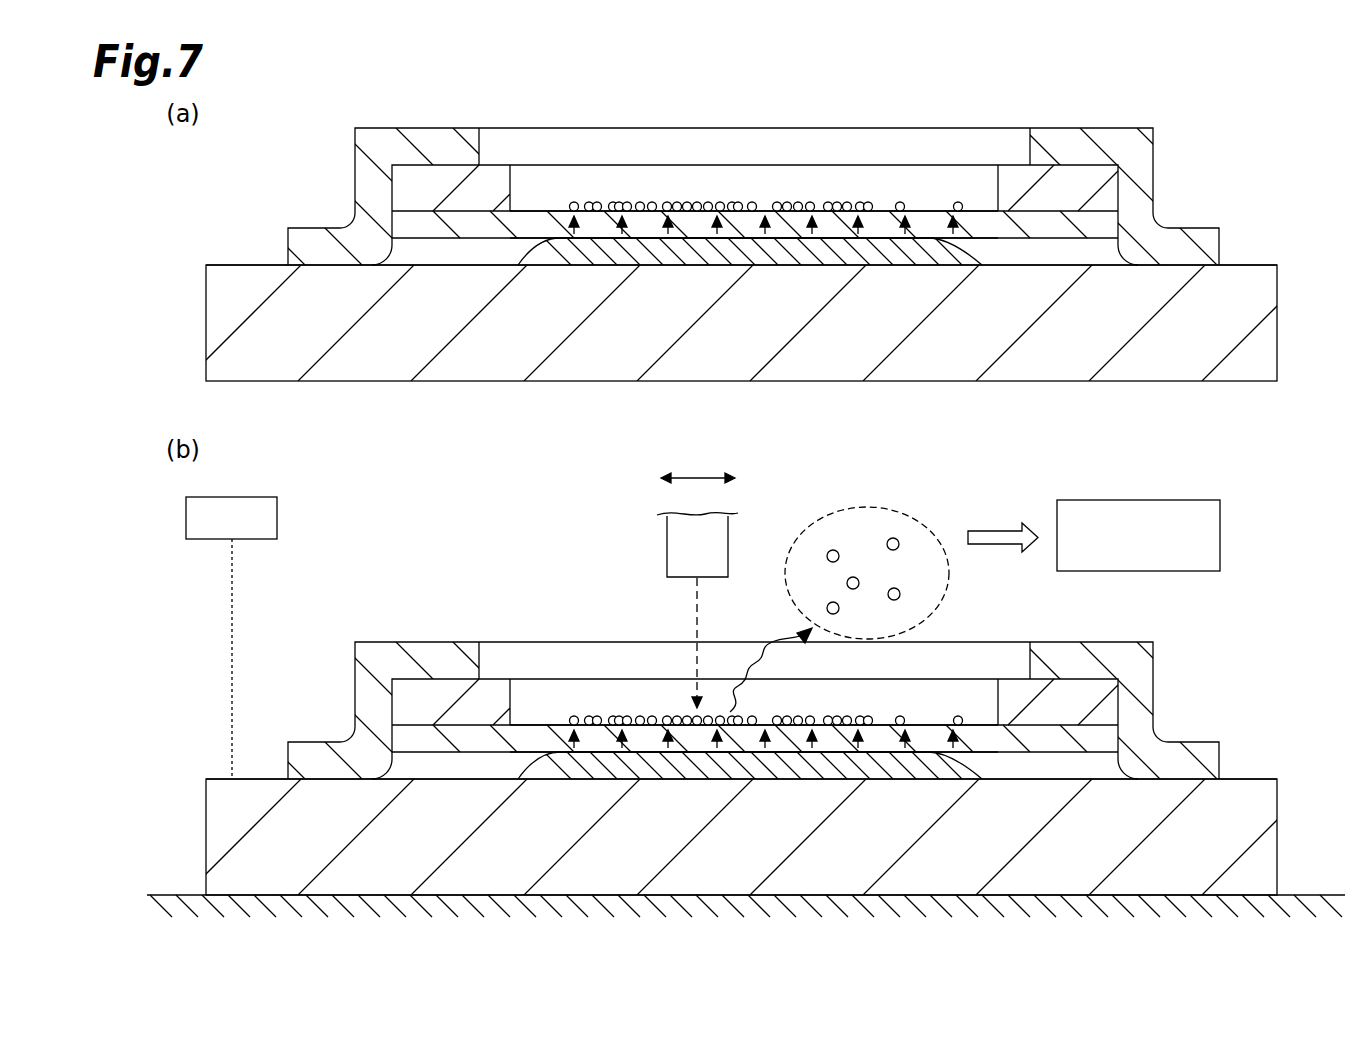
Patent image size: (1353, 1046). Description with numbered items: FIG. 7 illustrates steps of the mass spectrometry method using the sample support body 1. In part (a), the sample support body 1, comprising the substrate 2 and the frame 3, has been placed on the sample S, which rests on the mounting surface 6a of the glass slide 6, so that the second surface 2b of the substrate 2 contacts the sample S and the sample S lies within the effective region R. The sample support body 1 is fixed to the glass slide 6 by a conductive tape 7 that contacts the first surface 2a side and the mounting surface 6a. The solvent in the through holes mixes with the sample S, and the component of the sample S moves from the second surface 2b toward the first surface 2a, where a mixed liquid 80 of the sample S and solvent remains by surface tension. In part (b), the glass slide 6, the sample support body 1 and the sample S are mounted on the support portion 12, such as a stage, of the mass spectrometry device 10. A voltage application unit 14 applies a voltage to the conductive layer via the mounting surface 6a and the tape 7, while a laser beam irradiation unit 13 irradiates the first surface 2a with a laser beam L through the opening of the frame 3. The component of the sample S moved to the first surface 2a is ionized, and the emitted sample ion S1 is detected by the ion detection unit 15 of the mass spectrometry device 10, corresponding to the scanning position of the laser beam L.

The sample support body 1 is at (1095, 159).
The substrate 2 is at (1100, 225).
The first surface 2a is at (537, 208).
The second surface 2b is at (508, 240).
The frame 3 is at (1013, 177).
The glass slide 6 is at (1268, 333).
The mounting surface 6a is at (1233, 265).
The tape 7 is at (1190, 228).
The mass spectrometry device 10 is at (1207, 496).
The support portion 12 is at (183, 894).
The laser beam irradiation unit 13 is at (673, 548).
The voltage application unit 14 is at (283, 510).
The ion detection unit 15 is at (1222, 535).
The mixed liquid 80 is at (899, 202).
The laser beam L is at (697, 605).
The effective region R is at (975, 209).
The sample S is at (979, 258).
The sample ion S1 is at (893, 537).